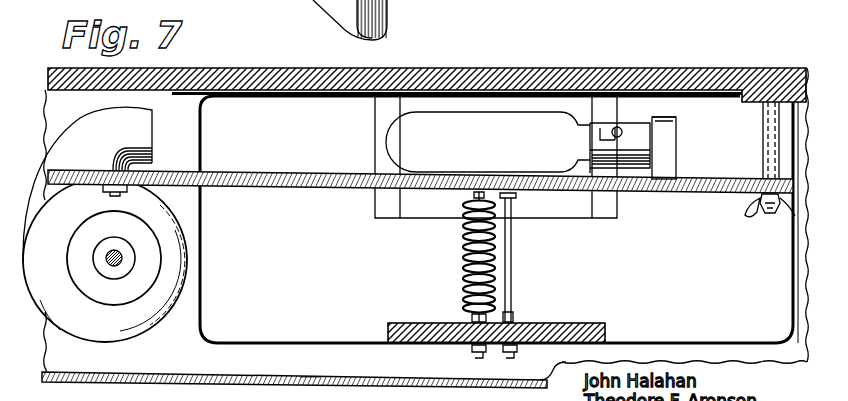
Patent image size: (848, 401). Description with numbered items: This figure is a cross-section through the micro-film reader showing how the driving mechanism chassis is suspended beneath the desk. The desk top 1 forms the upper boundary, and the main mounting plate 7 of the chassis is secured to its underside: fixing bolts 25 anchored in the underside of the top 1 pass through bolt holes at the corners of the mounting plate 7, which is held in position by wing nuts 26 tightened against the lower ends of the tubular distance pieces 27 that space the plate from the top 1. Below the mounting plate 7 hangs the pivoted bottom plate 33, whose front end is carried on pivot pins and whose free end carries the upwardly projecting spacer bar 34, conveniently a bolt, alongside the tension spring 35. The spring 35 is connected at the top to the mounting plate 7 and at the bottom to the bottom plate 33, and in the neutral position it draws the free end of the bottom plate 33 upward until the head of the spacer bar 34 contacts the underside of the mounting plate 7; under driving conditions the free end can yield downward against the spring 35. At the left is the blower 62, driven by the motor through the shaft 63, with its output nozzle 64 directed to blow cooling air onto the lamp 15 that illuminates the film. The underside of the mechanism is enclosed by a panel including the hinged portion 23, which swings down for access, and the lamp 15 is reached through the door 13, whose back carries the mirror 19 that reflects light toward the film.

The top 1 is at (474, 70).
The mounting plate 7 is at (280, 168).
The door 13 is at (233, 333).
The lamp 15 is at (447, 120).
The mirror 19 is at (426, 213).
The hinged portion 23 is at (310, 382).
The fixing bolts 25 is at (772, 213).
The wing nuts 26 is at (744, 217).
The tubular distance pieces 27 is at (760, 153).
The bottom plate 33 is at (575, 323).
The spacer bar 34 is at (513, 270).
The tension spring 35 is at (462, 250).
The blower 62 is at (68, 327).
The shaft 63 is at (119, 254).
The output nozzle 64 is at (160, 135).